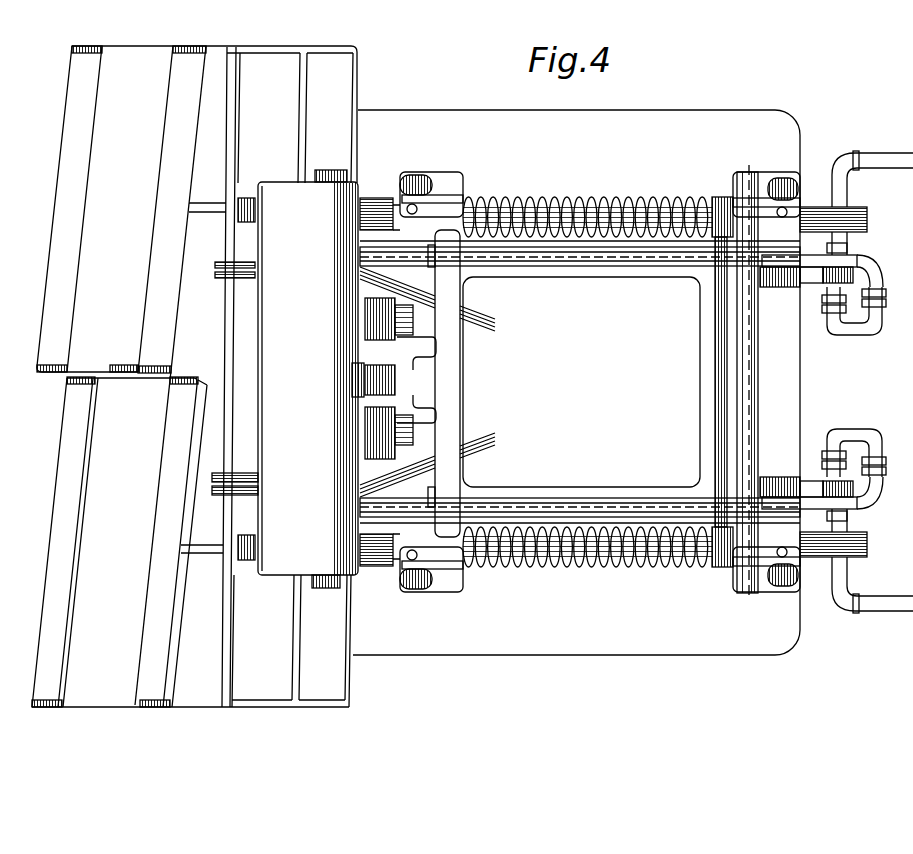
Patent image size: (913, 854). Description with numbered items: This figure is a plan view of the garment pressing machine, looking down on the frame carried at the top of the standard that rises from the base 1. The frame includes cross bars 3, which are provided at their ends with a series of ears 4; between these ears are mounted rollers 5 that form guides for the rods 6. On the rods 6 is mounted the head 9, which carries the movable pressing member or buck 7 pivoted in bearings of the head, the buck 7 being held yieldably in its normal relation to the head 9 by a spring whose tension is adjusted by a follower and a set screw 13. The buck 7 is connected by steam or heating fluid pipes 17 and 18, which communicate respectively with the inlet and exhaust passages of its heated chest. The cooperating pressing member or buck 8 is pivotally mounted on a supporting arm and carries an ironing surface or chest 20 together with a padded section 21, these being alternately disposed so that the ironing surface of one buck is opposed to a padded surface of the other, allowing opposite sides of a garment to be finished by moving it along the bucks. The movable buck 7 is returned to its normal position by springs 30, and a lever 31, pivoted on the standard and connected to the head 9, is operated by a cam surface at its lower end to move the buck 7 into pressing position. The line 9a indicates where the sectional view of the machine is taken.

The base 1 is at (576, 382).
The cross bars 3 is at (748, 360).
The ears 4 is at (440, 583).
The rollers 5 is at (423, 178).
The rods 6 is at (598, 562).
The buck 7 is at (191, 194).
The buck 8 is at (69, 209).
The head 9 is at (308, 379).
The section line 9a is at (733, 614).
The set screw 13 is at (463, 389).
The steam or heating fluid pipe 17 is at (383, 537).
The steam or heating fluid pipe 18 is at (394, 247).
The ironing surface or chest 20 is at (120, 209).
The padded section 21 is at (119, 542).
The springs 30 is at (558, 562).
The lever 31 is at (418, 378).